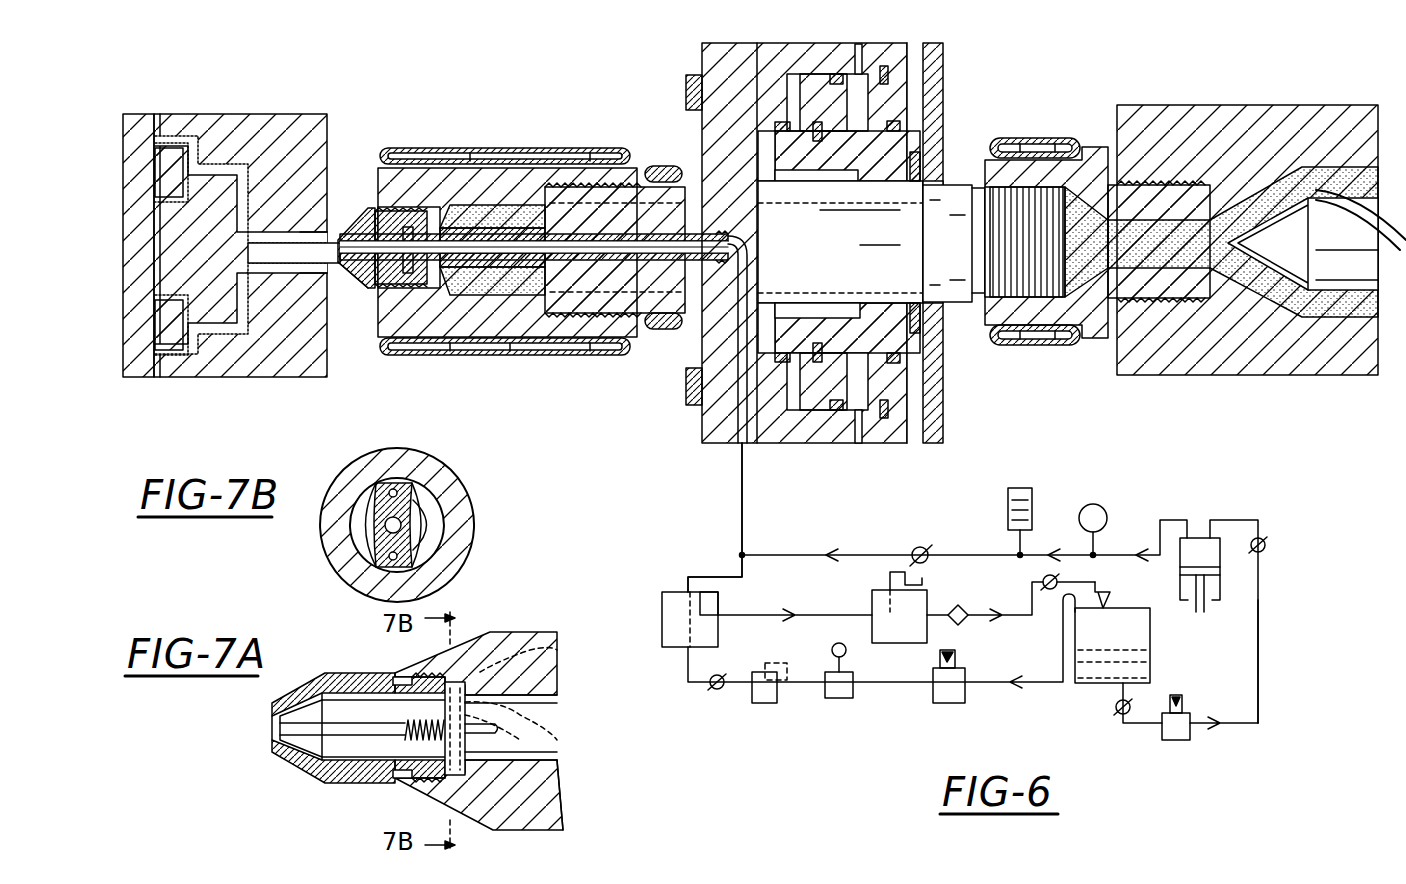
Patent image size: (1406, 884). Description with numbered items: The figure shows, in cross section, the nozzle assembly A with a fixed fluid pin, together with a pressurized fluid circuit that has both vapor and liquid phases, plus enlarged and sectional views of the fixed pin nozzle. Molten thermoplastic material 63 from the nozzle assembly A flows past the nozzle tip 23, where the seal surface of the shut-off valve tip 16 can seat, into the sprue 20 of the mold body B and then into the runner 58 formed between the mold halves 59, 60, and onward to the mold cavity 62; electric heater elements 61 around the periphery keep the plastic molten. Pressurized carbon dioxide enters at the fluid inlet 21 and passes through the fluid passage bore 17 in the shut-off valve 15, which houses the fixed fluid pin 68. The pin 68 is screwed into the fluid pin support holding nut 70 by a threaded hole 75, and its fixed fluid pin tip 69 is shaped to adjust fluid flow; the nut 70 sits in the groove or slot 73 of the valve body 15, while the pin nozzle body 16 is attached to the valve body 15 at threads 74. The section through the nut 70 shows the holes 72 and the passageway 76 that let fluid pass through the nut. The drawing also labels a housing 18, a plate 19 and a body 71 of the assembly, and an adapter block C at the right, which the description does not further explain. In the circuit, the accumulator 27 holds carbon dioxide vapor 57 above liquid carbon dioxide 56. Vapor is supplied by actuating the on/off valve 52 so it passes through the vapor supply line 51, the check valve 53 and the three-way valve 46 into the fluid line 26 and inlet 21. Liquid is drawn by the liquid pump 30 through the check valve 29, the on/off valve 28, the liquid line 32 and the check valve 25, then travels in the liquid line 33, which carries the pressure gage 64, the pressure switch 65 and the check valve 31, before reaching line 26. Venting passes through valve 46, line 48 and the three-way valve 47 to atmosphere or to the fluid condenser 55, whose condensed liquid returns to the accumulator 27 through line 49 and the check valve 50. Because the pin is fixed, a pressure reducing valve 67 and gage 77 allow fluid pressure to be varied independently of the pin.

In FIG. 6, the shut-off valve 15 is at (485, 296).
In FIG. 7B, the shut-off valve 15 is at (448, 460).
In FIG. 7A, the shut-off valve 15 is at (527, 632).
In FIG. 6, the shut-off valve tip 16 is at (388, 232).
In FIG. 7A, the shut-off valve tip 16 is at (318, 785).
In FIG. 6, the fluid passage bore 17 is at (548, 300).
In FIG. 7A, the fluid passage bore 17 is at (545, 700).
In FIG. 6, the housing 18 is at (855, 40).
In FIG. 6, the end plate 19 is at (945, 100).
In FIG. 6, the sprue 20 is at (286, 266).
In FIG. 6, the fluid inlet 21 is at (733, 445).
In FIG. 6, the nozzle tip 23 is at (352, 292).
In FIG. 6, the check valve 25 is at (1266, 545).
In FIG. 6, the fluid line 26 is at (742, 500).
In FIG. 6, the accumulator 27 is at (1150, 640).
In FIG. 6, the air operated solenoid on/off valve 28 is at (1178, 740).
In FIG. 6, the check valve 29 is at (1115, 710).
In FIG. 6, the liquid pump 30 is at (1200, 538).
In FIG. 6, the check valve 31 is at (918, 547).
In FIG. 6, the liquid line 32 is at (1258, 680).
In FIG. 6, the liquid line 33 is at (800, 553).
In FIG. 6, the three-way valve 46 is at (665, 592).
In FIG. 6, the three-way valve 47 is at (882, 645).
In FIG. 6, the line 48 is at (772, 618).
In FIG. 6, the line 49 is at (1000, 625).
In FIG. 6, the check valve 50 is at (1060, 578).
In FIG. 6, the vapor supply line 51 is at (1058, 628).
In FIG. 6, the on/off valve 52 is at (940, 703).
In FIG. 6, the check valve 53 is at (712, 690).
In FIG. 6, the fluid condenser 55 is at (960, 604).
In FIG. 6, the liquid carbon dioxide 56 is at (1140, 668).
In FIG. 6, the carbon dioxide vapor 57 is at (1122, 610).
In FIG. 6, the runner 58 is at (244, 345).
In FIG. 6, the mold half 59 is at (140, 114).
In FIG. 6, the mold half 60 is at (262, 114).
In FIG. 6, the electric heater elements 61 is at (568, 148).
In FIG. 6, the mold cavity 62 is at (170, 352).
In FIG. 6, the thermoplastic material 63 is at (300, 232).
In FIG. 6, the pressure gage 64 is at (1106, 510).
In FIG. 6, the pressure switch 65 is at (1030, 485).
In FIG. 6, the pressure reducing valve 67 is at (768, 703).
In FIG. 6, the fixed fluid pin 68 is at (388, 290).
In FIG. 7A, the fixed fluid pin 68 is at (322, 700).
In FIG. 6, the fixed fluid pin tip 69 is at (345, 225).
In FIG. 7A, the fixed fluid pin tip 69 is at (272, 728).
In FIG. 6, the fluid pin support holding nut 70 is at (432, 290).
In FIG. 7B, the fluid pin support holding nut 70 is at (425, 500).
In FIG. 7A, the fluid pin support holding nut 70 is at (535, 780).
In FIG. 6, the injection body 71 is at (508, 172).
In FIG. 7B, the holes 72 is at (440, 560).
In FIG. 7A, the holes 72 is at (545, 655).
In FIG. 7A, the groove or slot 73 is at (480, 635).
In FIG. 7A, the threads 74 is at (410, 682).
In FIG. 7B, the threaded hole 75 is at (402, 525).
In FIG. 7A, the threaded hole 75 is at (545, 733).
In FIG. 7B, the passageway 76 is at (362, 532).
In FIG. 6, the gage 77 is at (838, 700).
In FIG. 6, the nozzle assembly A is at (462, 148).
In FIG. 6, the mold body B is at (190, 112).
In FIG. 6, the extruder adapter C is at (1165, 105).